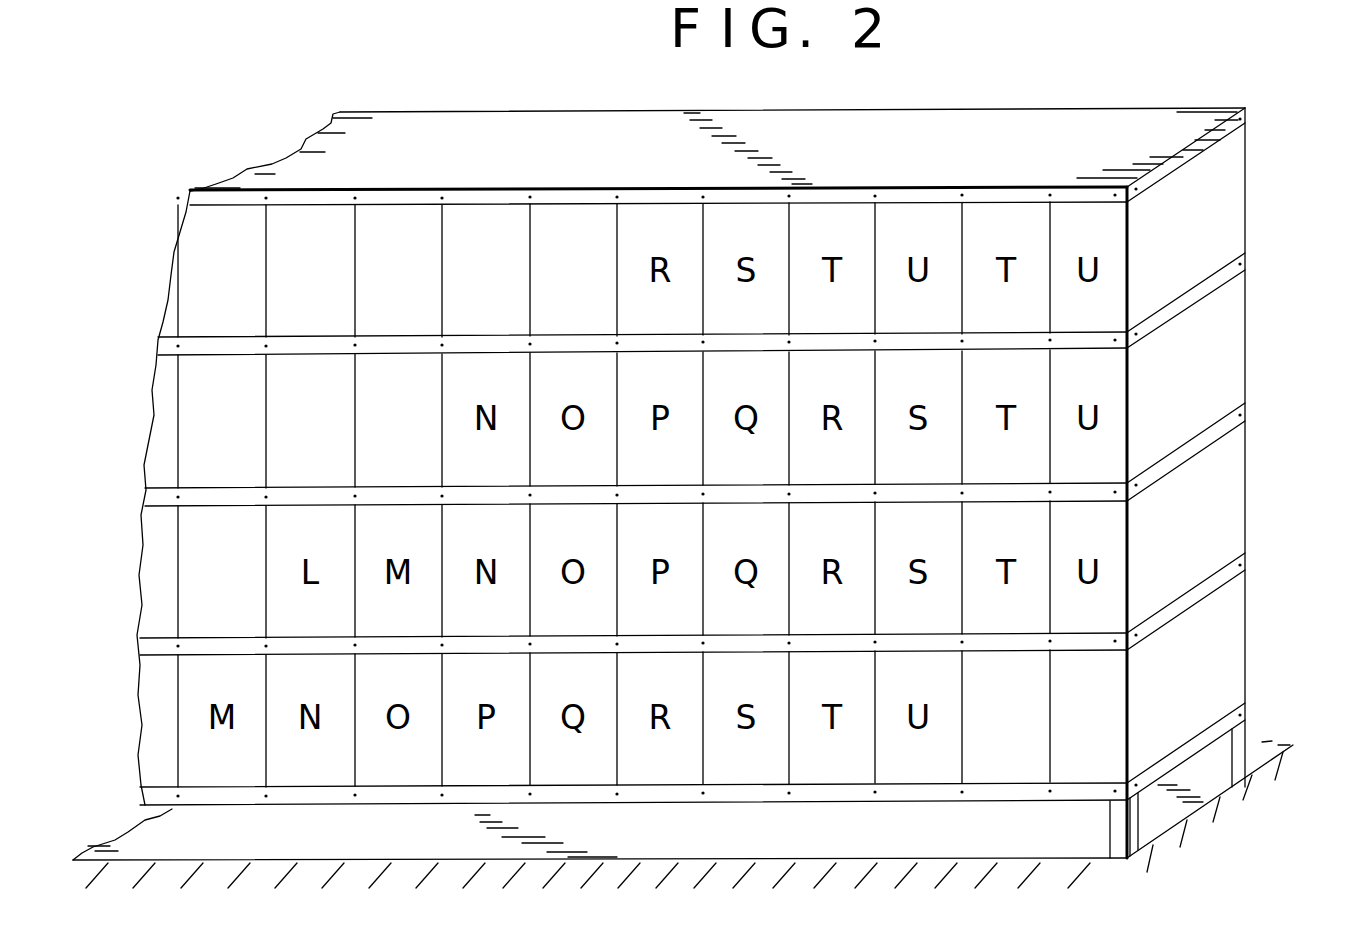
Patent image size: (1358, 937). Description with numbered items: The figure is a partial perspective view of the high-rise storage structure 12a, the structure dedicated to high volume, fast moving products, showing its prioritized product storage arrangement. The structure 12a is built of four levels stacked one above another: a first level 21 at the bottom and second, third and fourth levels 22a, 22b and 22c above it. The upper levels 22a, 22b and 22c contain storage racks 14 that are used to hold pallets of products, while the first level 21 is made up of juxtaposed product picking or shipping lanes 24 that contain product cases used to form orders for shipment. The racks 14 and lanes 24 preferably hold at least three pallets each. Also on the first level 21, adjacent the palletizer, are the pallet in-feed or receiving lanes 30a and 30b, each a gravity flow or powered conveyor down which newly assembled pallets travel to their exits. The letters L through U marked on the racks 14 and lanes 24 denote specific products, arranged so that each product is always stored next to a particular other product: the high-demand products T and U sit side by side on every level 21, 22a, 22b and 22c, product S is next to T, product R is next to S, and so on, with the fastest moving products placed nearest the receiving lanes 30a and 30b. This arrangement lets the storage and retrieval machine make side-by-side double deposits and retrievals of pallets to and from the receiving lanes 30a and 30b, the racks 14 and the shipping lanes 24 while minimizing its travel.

The storage structure 12a is at (533, 110).
The storage racks 14 is at (818, 218).
The first level 21 is at (1240, 632).
The second level 22a is at (1243, 478).
The third level 22b is at (1245, 332).
The fourth level 22c is at (1245, 188).
The product shipping lanes 24 is at (253, 745).
The pallet receiving lane 30a is at (1040, 727).
The pallet receiving lane 30b is at (1067, 727).